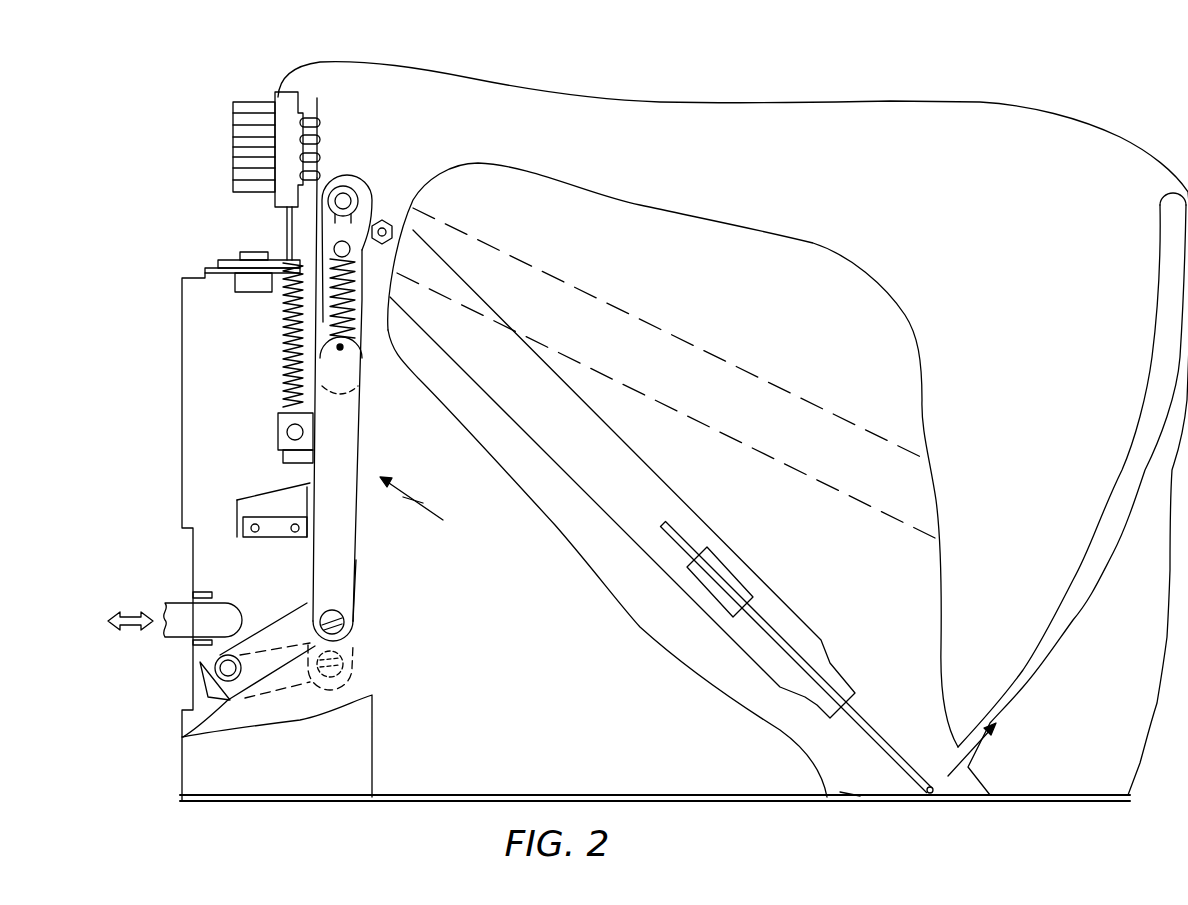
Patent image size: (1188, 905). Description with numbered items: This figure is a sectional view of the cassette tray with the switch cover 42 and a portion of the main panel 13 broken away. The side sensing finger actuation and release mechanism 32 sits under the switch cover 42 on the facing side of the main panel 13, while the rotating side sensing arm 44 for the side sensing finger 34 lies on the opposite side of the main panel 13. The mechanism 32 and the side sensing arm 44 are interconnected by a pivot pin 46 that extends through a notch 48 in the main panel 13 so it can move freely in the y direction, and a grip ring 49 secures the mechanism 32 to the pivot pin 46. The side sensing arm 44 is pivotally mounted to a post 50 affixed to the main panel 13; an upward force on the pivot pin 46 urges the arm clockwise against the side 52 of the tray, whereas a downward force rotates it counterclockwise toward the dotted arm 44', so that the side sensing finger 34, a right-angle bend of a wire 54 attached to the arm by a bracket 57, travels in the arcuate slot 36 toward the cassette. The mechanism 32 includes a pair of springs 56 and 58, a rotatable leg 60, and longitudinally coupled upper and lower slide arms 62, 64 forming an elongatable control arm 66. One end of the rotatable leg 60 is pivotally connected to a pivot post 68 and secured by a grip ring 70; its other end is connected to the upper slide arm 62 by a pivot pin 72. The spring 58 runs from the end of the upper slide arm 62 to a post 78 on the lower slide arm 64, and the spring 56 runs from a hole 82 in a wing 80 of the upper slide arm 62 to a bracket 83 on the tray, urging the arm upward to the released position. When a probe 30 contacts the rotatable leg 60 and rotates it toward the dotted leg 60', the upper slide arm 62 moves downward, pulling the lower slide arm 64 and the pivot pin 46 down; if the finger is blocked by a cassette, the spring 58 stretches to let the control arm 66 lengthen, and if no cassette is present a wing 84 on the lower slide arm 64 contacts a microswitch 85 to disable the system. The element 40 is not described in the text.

The main panel 13 is at (848, 110).
The probe 30 is at (178, 638).
The side sensing finger actuation and release mechanism 32 is at (428, 508).
The side sensing finger 34 is at (942, 796).
The arcuate slot 36 is at (1152, 345).
The motor heat sink 40 is at (233, 141).
The switch cover 42 is at (364, 748).
The side sensing arm 44 is at (622, 474).
The dotted side sensing arm 44' is at (666, 373).
The pivot pin 46 is at (340, 194).
The notch 48 is at (292, 260).
The grip ring 49 is at (349, 193).
The post 50 is at (385, 219).
The side 52 is at (875, 794).
The wire 54 is at (870, 726).
The spring 56 is at (284, 386).
The bracket 57 is at (730, 573).
The spring 58 is at (350, 291).
The rotatable leg 60 is at (267, 635).
The dotted rotatable leg 60' is at (296, 683).
The upper slide arm 62 is at (357, 565).
The lower slide arm 64 is at (365, 326).
The elongatable control arm 66 is at (364, 415).
The pivot post 68 is at (215, 668).
The grip ring 70 is at (198, 723).
The pivot pin 72 is at (335, 611).
The post 78 is at (350, 249).
The wing 80 is at (279, 427).
The hole 82 is at (287, 439).
The bracket 83 is at (277, 274).
The wing 84 is at (285, 463).
The microswitch 85 is at (239, 538).